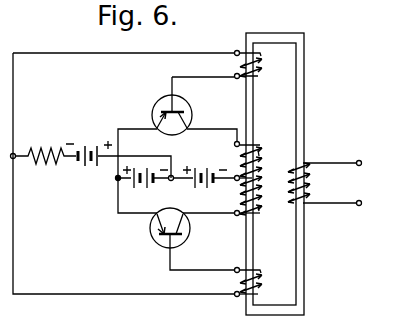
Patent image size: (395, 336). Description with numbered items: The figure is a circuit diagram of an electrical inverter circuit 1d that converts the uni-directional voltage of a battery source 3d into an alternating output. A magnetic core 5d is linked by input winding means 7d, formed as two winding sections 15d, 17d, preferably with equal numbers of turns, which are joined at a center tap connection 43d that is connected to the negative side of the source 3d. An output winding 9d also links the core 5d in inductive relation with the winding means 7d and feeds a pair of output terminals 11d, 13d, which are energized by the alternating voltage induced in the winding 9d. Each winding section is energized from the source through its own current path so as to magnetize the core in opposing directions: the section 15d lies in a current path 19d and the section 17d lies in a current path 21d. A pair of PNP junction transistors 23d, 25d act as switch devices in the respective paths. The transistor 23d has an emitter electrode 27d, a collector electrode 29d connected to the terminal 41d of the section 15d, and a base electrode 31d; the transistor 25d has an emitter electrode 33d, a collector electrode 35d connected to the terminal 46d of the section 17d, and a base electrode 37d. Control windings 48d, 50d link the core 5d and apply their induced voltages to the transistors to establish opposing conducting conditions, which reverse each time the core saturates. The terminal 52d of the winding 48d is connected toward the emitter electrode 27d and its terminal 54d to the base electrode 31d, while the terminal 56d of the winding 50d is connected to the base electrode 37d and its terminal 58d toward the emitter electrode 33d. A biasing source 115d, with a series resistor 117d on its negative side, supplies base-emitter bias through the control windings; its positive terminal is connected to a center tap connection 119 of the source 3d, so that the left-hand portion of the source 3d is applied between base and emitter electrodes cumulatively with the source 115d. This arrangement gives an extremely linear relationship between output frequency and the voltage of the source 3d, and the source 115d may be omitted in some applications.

The electrical inverter circuit 1d is at (129, 318).
The source of uni-directional voltage 3d is at (186, 203).
The core 5d is at (305, 250).
The input winding means 7d is at (278, 189).
The output winding 9d is at (311, 185).
The output terminal 11d is at (359, 160).
The output terminal 13d is at (359, 206).
The winding section 15d is at (259, 156).
The winding section 17d is at (259, 206).
The current path 19d is at (150, 150).
The current path 21d is at (148, 205).
The transistor 23d is at (188, 103).
The transistor 25d is at (181, 248).
The emitter electrode 27d is at (154, 120).
The collector electrode 29d is at (190, 118).
The base electrode 31d is at (170, 101).
The emitter electrode 33d is at (155, 226).
The collector electrode 35d is at (188, 222).
The base electrode 37d is at (166, 243).
The terminal of winding section 41d is at (234, 144).
The center tap connection 43d is at (234, 176).
The terminal of winding section 46d is at (237, 218).
The control winding 48d is at (257, 70).
The control winding 50d is at (257, 284).
The terminal of winding 52d is at (234, 52).
The terminal of winding 54d is at (234, 75).
The terminal of winding 56d is at (235, 272).
The terminal of winding 58d is at (235, 297).
The source of biasing potential 115d is at (88, 152).
The series resistor 117d is at (40, 150).
The center tap connection 119 is at (172, 175).